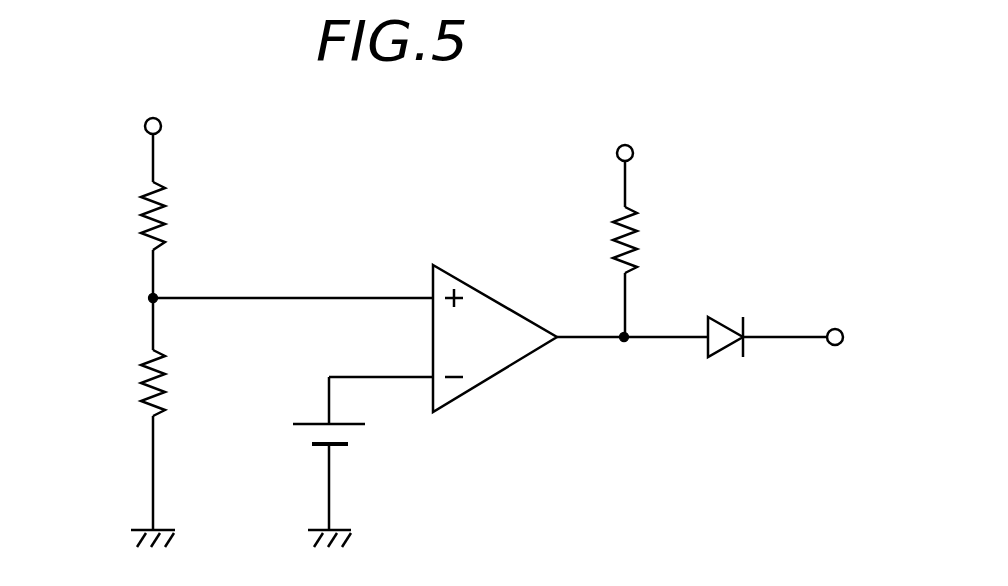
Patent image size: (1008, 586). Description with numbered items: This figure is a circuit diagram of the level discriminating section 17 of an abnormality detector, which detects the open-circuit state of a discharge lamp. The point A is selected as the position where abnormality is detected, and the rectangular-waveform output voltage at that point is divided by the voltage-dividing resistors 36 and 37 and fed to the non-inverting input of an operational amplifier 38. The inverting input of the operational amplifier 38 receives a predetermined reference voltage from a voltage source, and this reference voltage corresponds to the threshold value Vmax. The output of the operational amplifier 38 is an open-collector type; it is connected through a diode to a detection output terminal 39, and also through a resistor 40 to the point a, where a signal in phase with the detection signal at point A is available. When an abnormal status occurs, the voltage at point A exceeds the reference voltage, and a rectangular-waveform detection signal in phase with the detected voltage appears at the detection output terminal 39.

The level discriminating section 17 is at (731, 161).
The voltage-dividing resistor 36 is at (150, 216).
The voltage-dividing resistor 37 is at (150, 385).
The operational amplifier 38 is at (494, 297).
The detection output terminal 39 is at (837, 328).
The resistor 40 is at (634, 233).